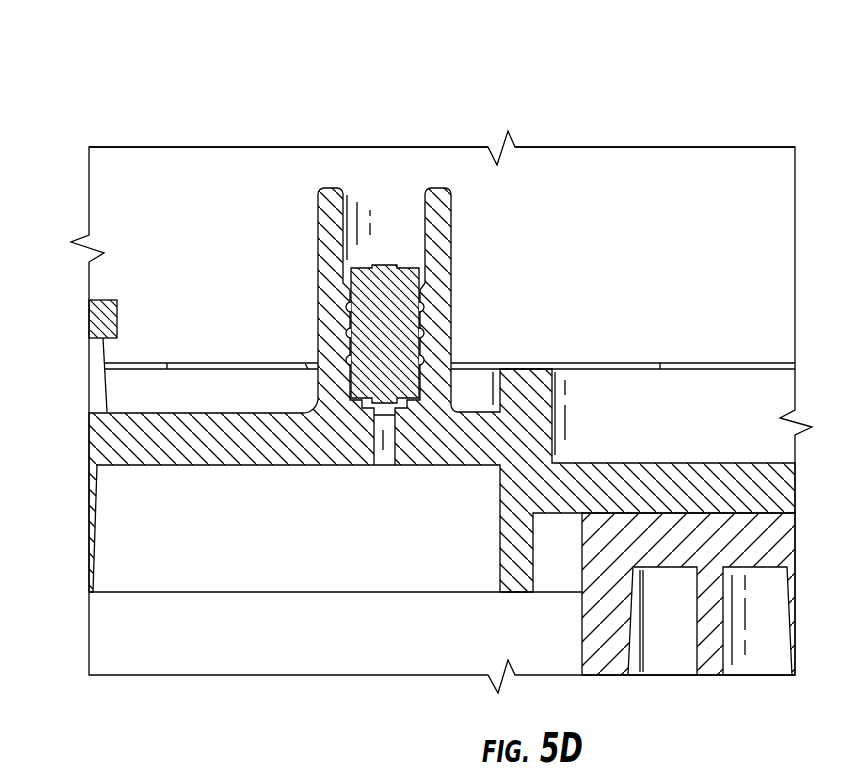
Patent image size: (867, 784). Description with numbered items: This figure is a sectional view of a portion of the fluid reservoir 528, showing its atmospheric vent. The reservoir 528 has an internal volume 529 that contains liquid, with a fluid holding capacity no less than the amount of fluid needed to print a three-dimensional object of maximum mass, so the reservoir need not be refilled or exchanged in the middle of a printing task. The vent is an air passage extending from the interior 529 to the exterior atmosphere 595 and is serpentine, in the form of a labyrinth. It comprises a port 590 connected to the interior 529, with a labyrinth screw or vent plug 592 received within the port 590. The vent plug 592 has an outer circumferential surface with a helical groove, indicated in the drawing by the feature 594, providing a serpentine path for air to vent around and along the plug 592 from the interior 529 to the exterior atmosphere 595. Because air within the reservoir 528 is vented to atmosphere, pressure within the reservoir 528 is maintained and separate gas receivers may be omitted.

The fluid reservoir 528 is at (128, 70).
The exterior atmosphere 595 is at (402, 158).
The port 590 is at (446, 298).
The vent plug 592 is at (383, 288).
The grooves 594 is at (418, 336).
The internal volume 529 is at (411, 605).